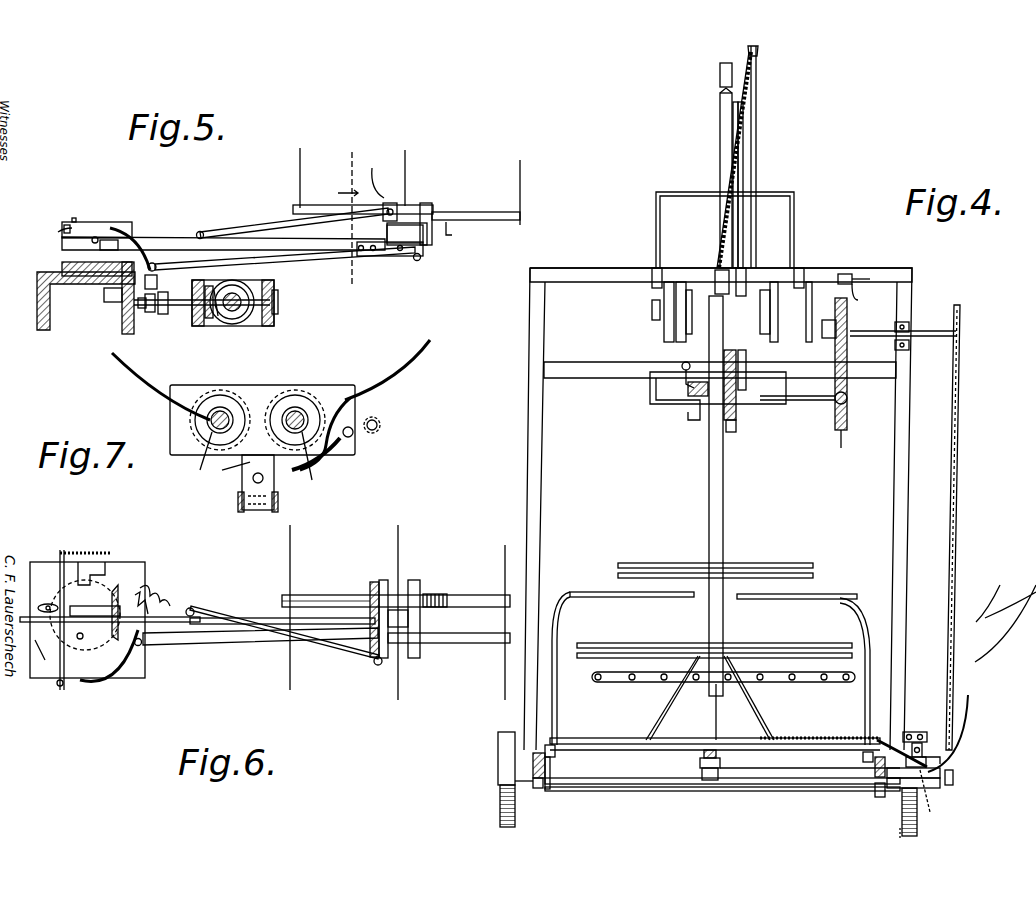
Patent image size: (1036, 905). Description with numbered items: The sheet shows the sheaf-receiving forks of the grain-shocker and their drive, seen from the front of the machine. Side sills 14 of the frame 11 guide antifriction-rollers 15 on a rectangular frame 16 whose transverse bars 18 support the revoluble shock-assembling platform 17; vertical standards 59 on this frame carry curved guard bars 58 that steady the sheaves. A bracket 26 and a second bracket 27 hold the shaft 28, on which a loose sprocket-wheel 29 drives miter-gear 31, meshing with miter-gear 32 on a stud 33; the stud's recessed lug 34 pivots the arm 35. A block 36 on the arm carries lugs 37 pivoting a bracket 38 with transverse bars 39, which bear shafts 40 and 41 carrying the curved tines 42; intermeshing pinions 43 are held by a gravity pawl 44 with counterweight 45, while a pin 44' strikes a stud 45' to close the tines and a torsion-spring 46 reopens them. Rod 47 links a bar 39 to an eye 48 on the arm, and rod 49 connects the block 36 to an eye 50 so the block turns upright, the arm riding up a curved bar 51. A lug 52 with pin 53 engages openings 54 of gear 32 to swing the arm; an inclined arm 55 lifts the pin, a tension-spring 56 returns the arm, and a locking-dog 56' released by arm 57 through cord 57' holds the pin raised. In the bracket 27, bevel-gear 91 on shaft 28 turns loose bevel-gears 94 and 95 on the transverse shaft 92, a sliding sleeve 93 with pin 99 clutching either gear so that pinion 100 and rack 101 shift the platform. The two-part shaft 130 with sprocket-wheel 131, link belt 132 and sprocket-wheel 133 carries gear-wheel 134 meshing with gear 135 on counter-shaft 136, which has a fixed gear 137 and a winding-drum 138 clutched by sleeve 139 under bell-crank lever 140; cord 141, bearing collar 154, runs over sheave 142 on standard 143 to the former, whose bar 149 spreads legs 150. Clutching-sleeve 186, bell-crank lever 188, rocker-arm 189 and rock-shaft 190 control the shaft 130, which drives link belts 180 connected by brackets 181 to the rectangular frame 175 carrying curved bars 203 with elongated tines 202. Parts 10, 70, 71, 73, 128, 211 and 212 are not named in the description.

In FIG. 4, the base block 10 is at (552, 770).
In FIG. 4, the frame 11 is at (524, 712).
In FIG. 4, the horizontal side sills 14 is at (540, 789).
In FIG. 4, the antifriction-rollers 15 is at (533, 755).
In FIG. 4, the rectangular frame 16 is at (556, 752).
In FIG. 4, the shock-assembling platform 17 is at (596, 738).
In FIG. 4, the transverse bars 18 is at (642, 752).
In FIG. 5, the lateral-projecting bracket 26 is at (37, 276).
In FIG. 6, the lateral-projecting bracket 26 is at (87, 610).
In FIG. 5, the second bracket 27 is at (268, 326).
In FIG. 4, the second bracket 27 is at (900, 790).
In FIG. 5, the shaft 28 is at (180, 306).
In FIG. 5, the sprocket-wheel 29 is at (160, 316).
In FIG. 5, the miter-gear 31 is at (124, 330).
In FIG. 6, the miter-gear 31 is at (118, 592).
In FIG. 5, the miter-gear 32 is at (62, 268).
In FIG. 4, the miter-gear 32 is at (938, 753).
In FIG. 5, the stud 33 is at (104, 294).
In FIG. 6, the stud 33 is at (47, 654).
In FIG. 6, the recessed lug 34 is at (80, 640).
In FIG. 5, the arm 35 is at (170, 237).
In FIG. 7, the arm 35 is at (278, 508).
In FIG. 6, the arm 35 is at (161, 595).
In FIG. 5, the block 36 is at (410, 257).
In FIG. 5, the lugs 37 is at (430, 242).
In FIG. 7, the lugs 37 is at (299, 465).
In FIG. 4, the lugs 37 is at (928, 760).
In FIG. 5, the bracket 38 is at (408, 223).
In FIG. 7, the bracket 38 is at (226, 475).
In FIG. 6, the bracket 38 is at (408, 618).
In FIG. 5, the transversely-disposed bars 39 is at (384, 206).
In FIG. 7, the transversely-disposed bars 39 is at (340, 385).
In FIG. 6, the transversely-disposed bars 39 is at (385, 578).
In FIG. 5, the shaft 40 is at (363, 200).
In FIG. 7, the shaft 40 is at (195, 458).
In FIG. 6, the shaft 40 is at (468, 595).
In FIG. 4, the shaft 40 is at (922, 742).
In FIG. 5, the shaft 41 is at (488, 212).
In FIG. 7, the shaft 41 is at (318, 474).
In FIG. 6, the shaft 41 is at (470, 636).
In FIG. 4, the shaft 41 is at (910, 732).
In FIG. 5, the curved tines or prongs 42 is at (300, 166).
In FIG. 7, the curved tines or prongs 42 is at (150, 392).
In FIG. 6, the curved tines or prongs 42 is at (290, 552).
In FIG. 4, the curved tines or prongs 42 is at (870, 706).
In FIG. 5, the pinions 43 is at (373, 175).
In FIG. 7, the pinions 43 is at (257, 420).
In FIG. 6, the pinions 43 is at (370, 588).
In FIG. 7, the pawl 44 is at (337, 437).
In FIG. 5, the pin 44' is at (468, 227).
In FIG. 4, the pin 44' is at (958, 742).
In FIG. 7, the counterweight 45 is at (356, 468).
In FIG. 5, the block or stud 45' is at (433, 268).
In FIG. 6, the helical torsion-spring 46 is at (436, 594).
In FIG. 5, the rod 47 is at (262, 224).
In FIG. 6, the rod 47 is at (270, 632).
In FIG. 5, the eye 48 is at (202, 231).
In FIG. 6, the eye 48 is at (194, 610).
In FIG. 5, the rod 49 is at (315, 258).
In FIG. 6, the rod 49 is at (222, 645).
In FIG. 5, the eye 50 is at (156, 266).
In FIG. 6, the eye 50 is at (153, 636).
In FIG. 5, the curved bar 51 is at (118, 228).
In FIG. 6, the curved bar 51 is at (125, 666).
In FIG. 5, the rearwardly-extending lug 52 is at (60, 232).
In FIG. 6, the rearwardly-extending lug 52 is at (48, 604).
In FIG. 5, the vertically-adjustable pin 53 is at (68, 225).
In FIG. 6, the vertically-adjustable pin 53 is at (48, 612).
In FIG. 5, the openings 54 is at (95, 236).
In FIG. 6, the openings 54 is at (60, 686).
In FIG. 6, the arm 55 is at (92, 562).
In FIG. 6, the tension-spring 56 is at (165, 564).
In FIG. 5, the locking-dog 56' is at (97, 194).
In FIG. 5, the arm 57 is at (78, 184).
In FIG. 6, the arm 57 is at (58, 598).
In FIG. 6, the rod or cord 57' is at (105, 526).
In FIG. 4, the curved arms or bars 58 is at (628, 598).
In FIG. 4, the vertical standards 59 is at (860, 602).
In FIG. 5, the collar 70 is at (152, 314).
In FIG. 5, the clutch 71 is at (158, 281).
In FIG. 5, the collar 73 is at (142, 310).
In FIG. 5, the bevel-gear 91 is at (208, 320).
In FIG. 5, the transversely-disposed shaft 92 is at (216, 320).
In FIG. 4, the transversely-disposed shaft 92 is at (786, 792).
In FIG. 5, the sleeve 93 is at (280, 302).
In FIG. 4, the loose bevel-gear 94 is at (910, 844).
In FIG. 5, the bevel-gear 95 is at (108, 240).
In FIG. 6, the bevel-gear 95 is at (108, 610).
In FIG. 4, the bevel-gear 95 is at (932, 801).
In FIG. 5, the pin 99 is at (244, 286).
In FIG. 4, the pinion 100 is at (708, 782).
In FIG. 4, the rack 101 is at (704, 756).
In FIG. 4, the vertical rod 128 is at (723, 516).
In FIG. 4, the two-part shaft 130 is at (926, 330).
In FIG. 4, the sprocket-wheel 131 is at (962, 312).
In FIG. 4, the link belt 132 is at (958, 446).
In FIG. 4, the sprocket-wheel 133 is at (953, 777).
In FIG. 4, the gear-wheel 134 is at (848, 350).
In FIG. 4, the gear 135 is at (846, 420).
In FIG. 4, the counter-shaft 136 is at (820, 402).
In FIG. 4, the fixed gear 137 is at (734, 432).
In FIG. 4, the loose winding-drum 138 is at (696, 396).
In FIG. 4, the clutching-sleeve 139 is at (668, 404).
In FIG. 4, the bell-crank lever 140 is at (682, 368).
In FIG. 4, the cord or chain 141 is at (726, 232).
In FIG. 4, the sheave 142 is at (760, 50).
In FIG. 4, the standard 143 is at (757, 86).
In FIG. 4, the vertically-movable bar 149 is at (714, 718).
In FIG. 4, the legs 150 is at (656, 720).
In FIG. 4, the projecting collar or block 154 is at (738, 376).
In FIG. 4, the rectangular frame 175 is at (794, 222).
In FIG. 4, the link belt 180 is at (676, 334).
In FIG. 4, the small bracket 181 is at (800, 270).
In FIG. 4, the clutching-sleeve 186 is at (828, 320).
In FIG. 4, the bell-crank lever 188 is at (810, 282).
In FIG. 4, the rocker-arm 189 is at (850, 274).
In FIG. 4, the rock-shaft 190 is at (869, 300).
In FIG. 4, the elongated tines 202 is at (854, 679).
In FIG. 4, the curved bars 203 is at (790, 683).
In FIG. 4, the tube 211 is at (738, 262).
In FIG. 4, the guide 212 is at (712, 282).